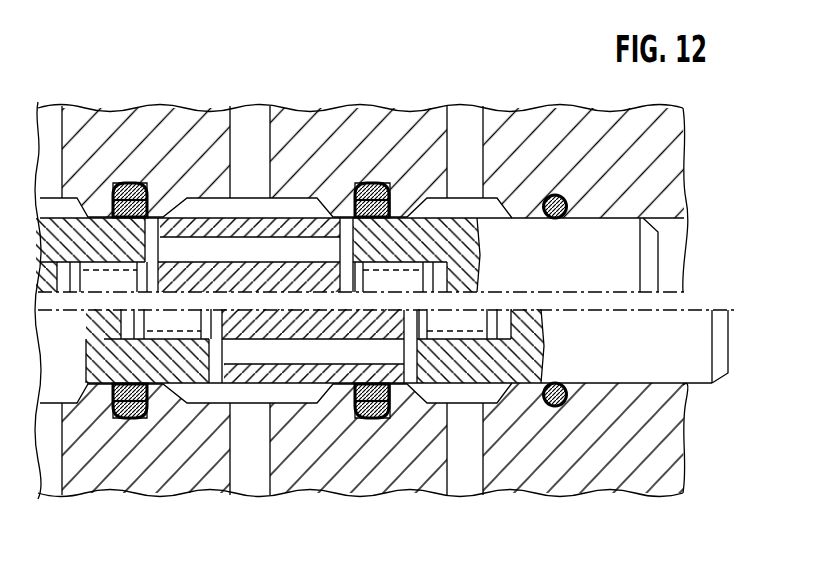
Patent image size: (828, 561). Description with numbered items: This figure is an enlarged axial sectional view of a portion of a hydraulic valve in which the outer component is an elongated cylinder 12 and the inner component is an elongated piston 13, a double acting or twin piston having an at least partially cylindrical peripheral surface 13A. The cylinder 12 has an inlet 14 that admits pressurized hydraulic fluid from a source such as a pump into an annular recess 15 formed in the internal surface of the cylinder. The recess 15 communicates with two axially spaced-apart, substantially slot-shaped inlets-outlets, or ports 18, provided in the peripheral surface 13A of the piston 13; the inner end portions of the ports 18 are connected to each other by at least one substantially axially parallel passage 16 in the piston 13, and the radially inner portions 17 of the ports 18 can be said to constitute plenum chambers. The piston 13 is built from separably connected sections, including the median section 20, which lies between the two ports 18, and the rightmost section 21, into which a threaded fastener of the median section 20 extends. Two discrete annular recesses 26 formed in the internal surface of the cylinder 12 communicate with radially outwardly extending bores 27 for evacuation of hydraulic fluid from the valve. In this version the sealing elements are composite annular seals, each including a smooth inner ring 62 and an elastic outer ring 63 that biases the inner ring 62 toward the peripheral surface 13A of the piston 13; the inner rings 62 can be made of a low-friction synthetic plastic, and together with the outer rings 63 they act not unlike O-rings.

The outer component (cylinder) 12 is at (420, 137).
The piston 13 is at (690, 305).
The peripheral surface 13A is at (585, 215).
The inlet 14 is at (245, 133).
The annular recess 15 is at (292, 225).
The passage (channel) 16 is at (215, 245).
The radially inner portions (plenum chambers) 17 is at (413, 383).
The inlets-outlets (ports) 18 is at (343, 230).
The median piston section 20 is at (390, 330).
The rightmost piston section 21 is at (601, 266).
The annular recesses 26 is at (494, 205).
The bores (holes) 27 is at (465, 458).
The inner ring 62 is at (117, 188).
The elastic outer ring 63 is at (128, 185).